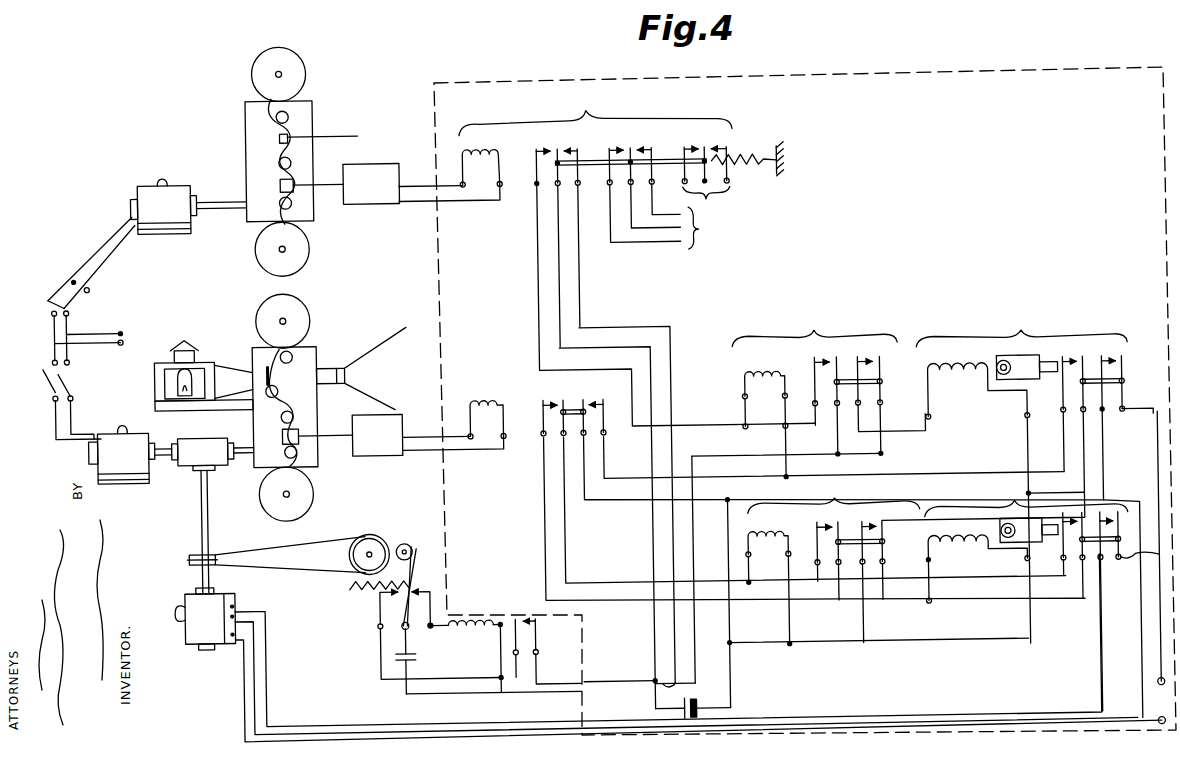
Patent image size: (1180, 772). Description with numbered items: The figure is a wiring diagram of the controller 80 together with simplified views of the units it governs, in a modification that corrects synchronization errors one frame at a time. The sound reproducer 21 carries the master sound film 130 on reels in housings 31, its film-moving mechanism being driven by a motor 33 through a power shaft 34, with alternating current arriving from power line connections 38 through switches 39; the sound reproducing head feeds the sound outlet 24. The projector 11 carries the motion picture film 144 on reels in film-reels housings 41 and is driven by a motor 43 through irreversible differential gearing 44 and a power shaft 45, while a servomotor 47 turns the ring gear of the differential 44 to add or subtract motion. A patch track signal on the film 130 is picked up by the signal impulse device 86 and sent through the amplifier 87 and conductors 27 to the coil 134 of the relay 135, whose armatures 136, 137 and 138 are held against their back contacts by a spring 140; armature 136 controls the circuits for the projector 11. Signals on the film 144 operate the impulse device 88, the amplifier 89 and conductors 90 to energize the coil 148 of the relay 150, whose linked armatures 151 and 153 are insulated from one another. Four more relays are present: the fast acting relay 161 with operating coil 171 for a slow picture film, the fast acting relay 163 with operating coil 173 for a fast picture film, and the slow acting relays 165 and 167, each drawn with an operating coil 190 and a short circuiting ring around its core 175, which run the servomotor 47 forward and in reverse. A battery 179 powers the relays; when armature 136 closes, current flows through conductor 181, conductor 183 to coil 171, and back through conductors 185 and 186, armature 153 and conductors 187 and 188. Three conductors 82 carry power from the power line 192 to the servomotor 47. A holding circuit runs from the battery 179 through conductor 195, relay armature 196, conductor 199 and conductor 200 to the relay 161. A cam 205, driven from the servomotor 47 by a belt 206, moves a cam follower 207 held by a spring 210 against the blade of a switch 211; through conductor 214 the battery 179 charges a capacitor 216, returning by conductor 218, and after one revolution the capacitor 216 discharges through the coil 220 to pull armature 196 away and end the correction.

The projector 11 is at (320, 353).
The sound reproducer 21 is at (243, 132).
The sound outlet 24 is at (333, 138).
The conductors 27 is at (440, 184).
The housings 31 is at (306, 87).
The motor 33 is at (137, 188).
The power shaft 34 is at (225, 210).
The power line connections 38 is at (96, 340).
The switches 39 is at (58, 290).
The film-reels housings 41 is at (305, 322).
The motor 43 is at (130, 454).
The differential gearing 44 is at (213, 454).
The power shaft 45 is at (240, 462).
The servomotor 47 is at (185, 602).
The controller 80 is at (920, 66).
The conductors 82 is at (855, 725).
The signal impulse device 86 is at (300, 190).
The amplifier 87 is at (368, 168).
The impulse device 88 is at (297, 432).
The amplifier 89 is at (385, 460).
The conductors 90 is at (468, 450).
The sound film 130 is at (280, 165).
The coil 134 is at (490, 146).
The relay 135 is at (602, 112).
The armature 136 is at (566, 146).
The armature 137 is at (640, 146).
The armature 138 is at (733, 146).
The spring 140 is at (748, 170).
The motion picture film 144 is at (262, 355).
The coil 148 is at (486, 402).
The relay 150 is at (590, 392).
The armature 151 is at (600, 400).
The armature 153 is at (585, 413).
The relay 161 is at (840, 332).
The relay 163 is at (905, 495).
The relay 165 is at (1010, 330).
The relay 167 is at (1018, 505).
The operating coil 171 is at (765, 372).
The operating coil 173 is at (770, 528).
The core 175 is at (1050, 358).
The battery 179 is at (700, 712).
The conductor 181 is at (651, 640).
The conductor 183 is at (537, 232).
The conductor 185 is at (795, 462).
The conductor 186 is at (722, 478).
The conductor 187 is at (590, 498).
The conductor 188 is at (726, 552).
The resynchronizer coil and plunger 190 is at (960, 358).
The power line 192 is at (1145, 715).
The conductor 195 is at (593, 675).
The relay armature 196 is at (538, 622).
The conductor 199 is at (672, 678).
The conductor 200 is at (691, 623).
The cam 205 is at (380, 545).
The belt 206 is at (292, 545).
The cam follower 207 is at (410, 550).
The spring 210 is at (372, 600).
The switch 211 is at (412, 585).
The conductor 214 is at (440, 680).
The capacitor 216 is at (414, 654).
The conductor 218 is at (448, 700).
The coil 220 is at (470, 625).